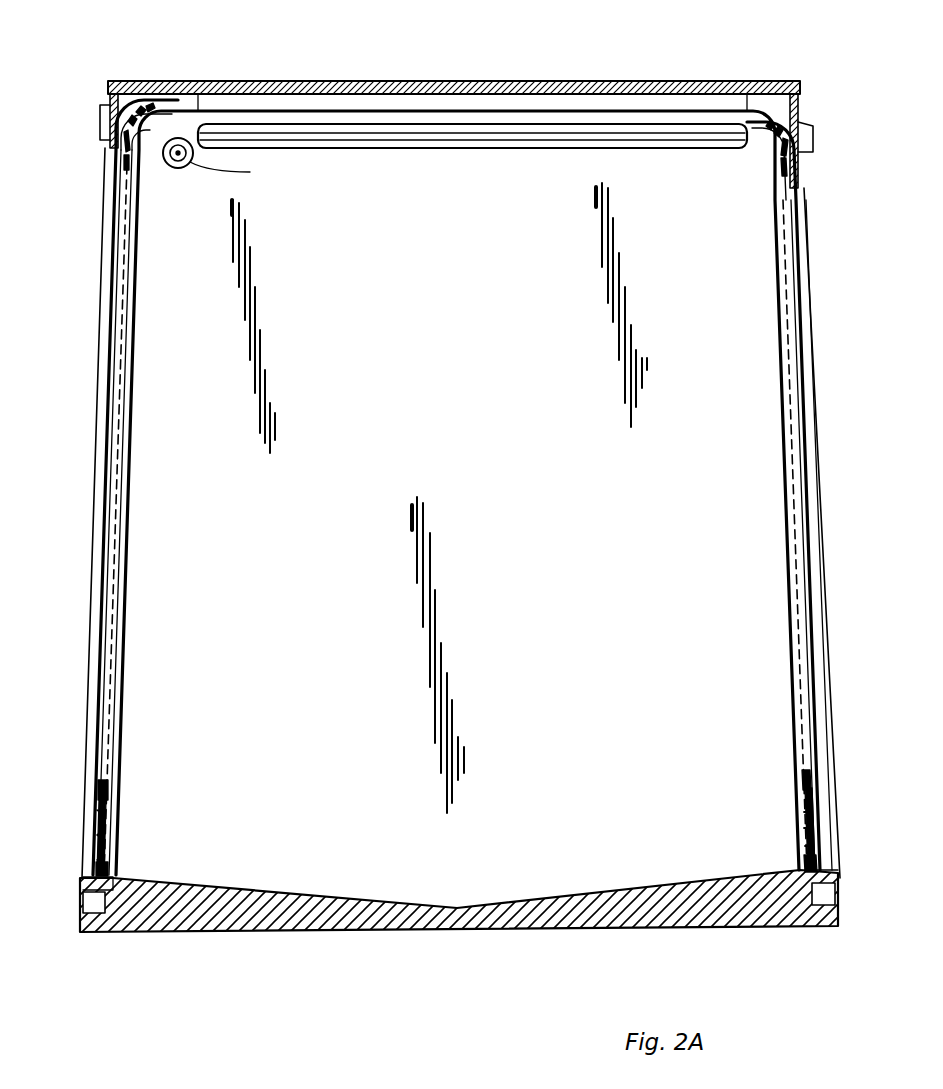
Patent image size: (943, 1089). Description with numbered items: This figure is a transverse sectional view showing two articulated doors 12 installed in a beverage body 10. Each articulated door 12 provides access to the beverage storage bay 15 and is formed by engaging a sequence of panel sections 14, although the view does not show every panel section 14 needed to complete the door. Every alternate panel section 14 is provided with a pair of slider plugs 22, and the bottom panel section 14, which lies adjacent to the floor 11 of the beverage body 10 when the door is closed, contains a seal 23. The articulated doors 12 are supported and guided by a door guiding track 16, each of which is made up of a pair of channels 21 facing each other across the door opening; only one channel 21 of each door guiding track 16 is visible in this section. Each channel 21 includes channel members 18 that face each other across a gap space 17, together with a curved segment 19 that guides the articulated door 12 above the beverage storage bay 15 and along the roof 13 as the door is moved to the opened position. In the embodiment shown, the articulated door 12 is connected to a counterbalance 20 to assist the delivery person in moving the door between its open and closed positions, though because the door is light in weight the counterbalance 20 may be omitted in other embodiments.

The beverage body 10 is at (203, 962).
The floor 11 is at (92, 871).
The articulated door 12 is at (104, 803).
The roof 13 is at (480, 82).
The panel section 14 is at (140, 165).
The beverage storage bay 15 is at (478, 848).
The door guiding track 16 is at (150, 500).
The gap space 17 is at (120, 672).
The channel member 18 is at (100, 245).
The curved segment 19 is at (130, 95).
The counterbalance 20 is at (195, 160).
The channel 21 is at (125, 440).
The slider plug 22 is at (802, 848).
The seal 23 is at (108, 867).